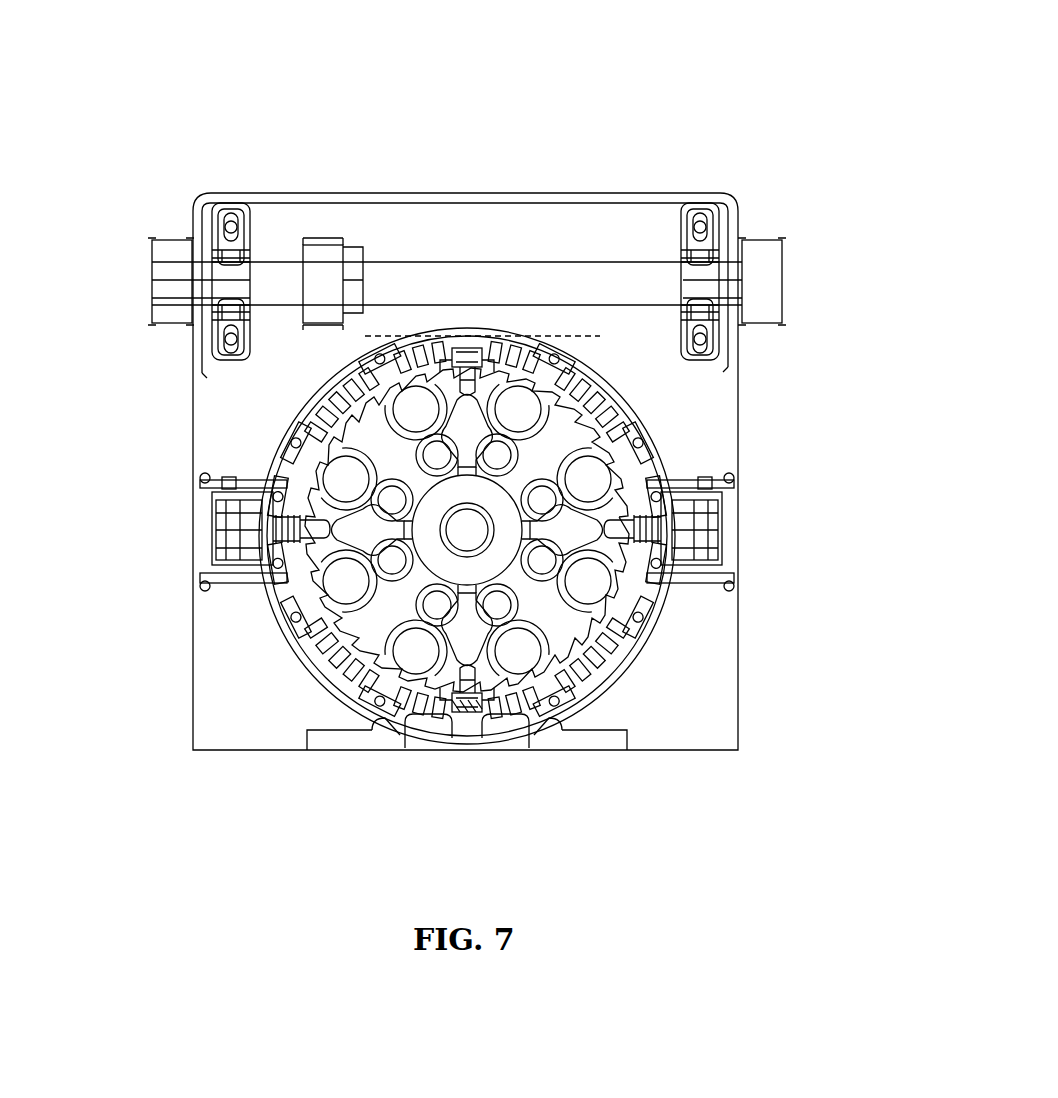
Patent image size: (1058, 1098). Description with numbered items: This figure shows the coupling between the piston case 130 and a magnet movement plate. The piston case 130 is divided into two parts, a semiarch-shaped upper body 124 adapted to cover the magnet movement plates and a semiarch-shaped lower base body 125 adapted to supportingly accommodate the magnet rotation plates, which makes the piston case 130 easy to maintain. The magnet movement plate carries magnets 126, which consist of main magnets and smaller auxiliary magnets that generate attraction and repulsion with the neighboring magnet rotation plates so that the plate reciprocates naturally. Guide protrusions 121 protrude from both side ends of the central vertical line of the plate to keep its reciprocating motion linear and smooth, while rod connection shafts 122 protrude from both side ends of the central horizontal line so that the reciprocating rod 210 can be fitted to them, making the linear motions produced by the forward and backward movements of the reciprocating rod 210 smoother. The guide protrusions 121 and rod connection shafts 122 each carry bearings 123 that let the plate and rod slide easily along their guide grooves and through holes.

The guide protrusion 121 is at (452, 700).
The rod connection shaft 122 is at (200, 488).
The bearing 123 is at (488, 740).
The upper body 124 is at (350, 387).
The lower base body 125 is at (267, 474).
The magnet 126 is at (640, 657).
The piston case 130 is at (152, 84).
The reciprocating rod 210 is at (200, 567).